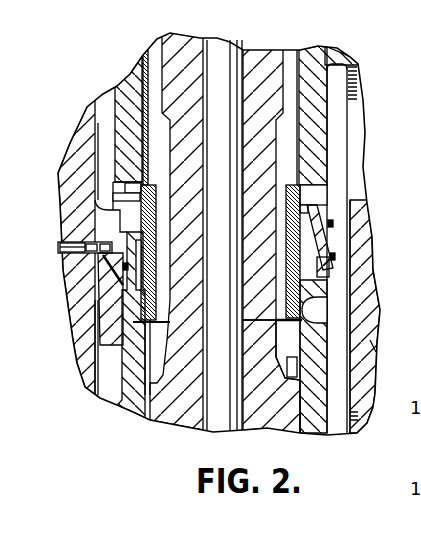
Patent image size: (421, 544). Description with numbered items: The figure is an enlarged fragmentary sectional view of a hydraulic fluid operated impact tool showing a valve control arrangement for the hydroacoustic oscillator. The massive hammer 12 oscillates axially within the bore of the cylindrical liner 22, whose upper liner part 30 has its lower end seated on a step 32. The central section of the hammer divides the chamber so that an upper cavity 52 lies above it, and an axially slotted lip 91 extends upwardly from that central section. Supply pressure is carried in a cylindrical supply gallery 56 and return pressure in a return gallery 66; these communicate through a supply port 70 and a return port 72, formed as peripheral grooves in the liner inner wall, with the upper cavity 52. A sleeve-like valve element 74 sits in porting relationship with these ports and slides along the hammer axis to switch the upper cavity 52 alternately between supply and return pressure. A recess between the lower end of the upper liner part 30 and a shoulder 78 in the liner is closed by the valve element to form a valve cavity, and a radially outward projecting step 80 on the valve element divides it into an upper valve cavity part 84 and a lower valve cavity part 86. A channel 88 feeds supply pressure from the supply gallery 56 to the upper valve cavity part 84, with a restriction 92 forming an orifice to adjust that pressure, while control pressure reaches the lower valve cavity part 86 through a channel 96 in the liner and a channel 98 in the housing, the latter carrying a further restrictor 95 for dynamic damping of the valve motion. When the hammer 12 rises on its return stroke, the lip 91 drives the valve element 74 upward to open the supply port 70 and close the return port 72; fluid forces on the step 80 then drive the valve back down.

The hammer 12 is at (259, 64).
The liner 22 is at (128, 352).
The upper liner part 30 is at (138, 67).
The step 32 is at (130, 220).
The upper cavity 52 is at (290, 138).
The supply gallery 56 is at (338, 377).
The return gallery 66 is at (340, 86).
The supply port 70 is at (310, 312).
The return port 72 is at (303, 187).
The valve element 74 is at (152, 195).
The shoulder 78 is at (172, 302).
The step 80 is at (298, 252).
The upper valve cavity part 84 is at (140, 228).
The lower valve cavity part 86 is at (140, 276).
The channel 88 is at (333, 242).
The axially slotted lip 91 is at (373, 349).
The restriction 92 is at (340, 278).
The restrictor 95 is at (103, 266).
The channel 96 is at (125, 278).
The channel 98 is at (95, 255).